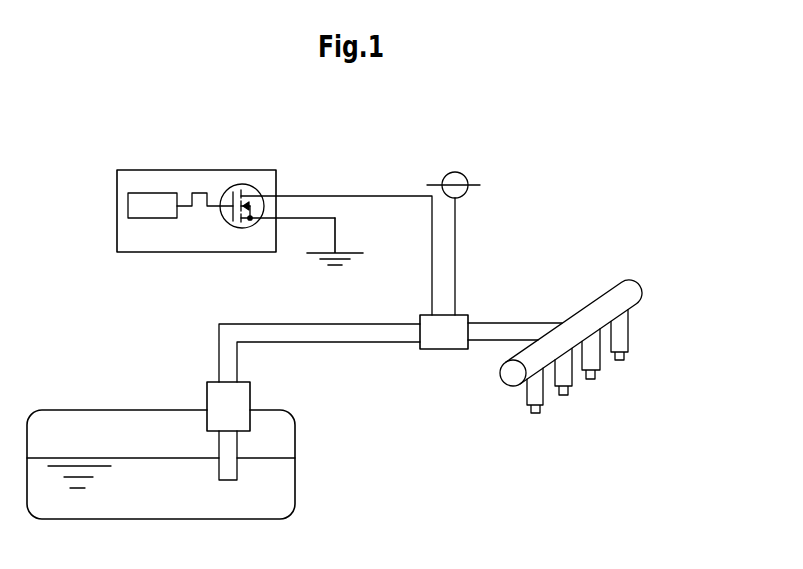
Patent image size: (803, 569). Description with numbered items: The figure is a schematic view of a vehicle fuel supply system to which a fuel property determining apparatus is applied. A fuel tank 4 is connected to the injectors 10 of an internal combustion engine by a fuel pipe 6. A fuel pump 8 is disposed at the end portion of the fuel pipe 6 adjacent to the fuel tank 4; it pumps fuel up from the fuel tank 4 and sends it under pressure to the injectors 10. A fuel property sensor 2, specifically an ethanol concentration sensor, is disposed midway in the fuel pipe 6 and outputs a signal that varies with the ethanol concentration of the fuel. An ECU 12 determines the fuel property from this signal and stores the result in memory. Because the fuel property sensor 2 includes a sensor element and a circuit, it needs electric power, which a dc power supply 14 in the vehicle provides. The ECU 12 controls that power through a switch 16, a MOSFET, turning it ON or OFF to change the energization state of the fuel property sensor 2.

The fuel property sensor 2 is at (462, 315).
The fuel tank 4 is at (102, 410).
The fuel pipe 6 is at (276, 324).
The fuel pump 8 is at (253, 398).
The injectors 10 is at (636, 356).
The ECU 12 is at (170, 170).
The dc power supply 14 is at (451, 172).
The switch 16 is at (236, 184).